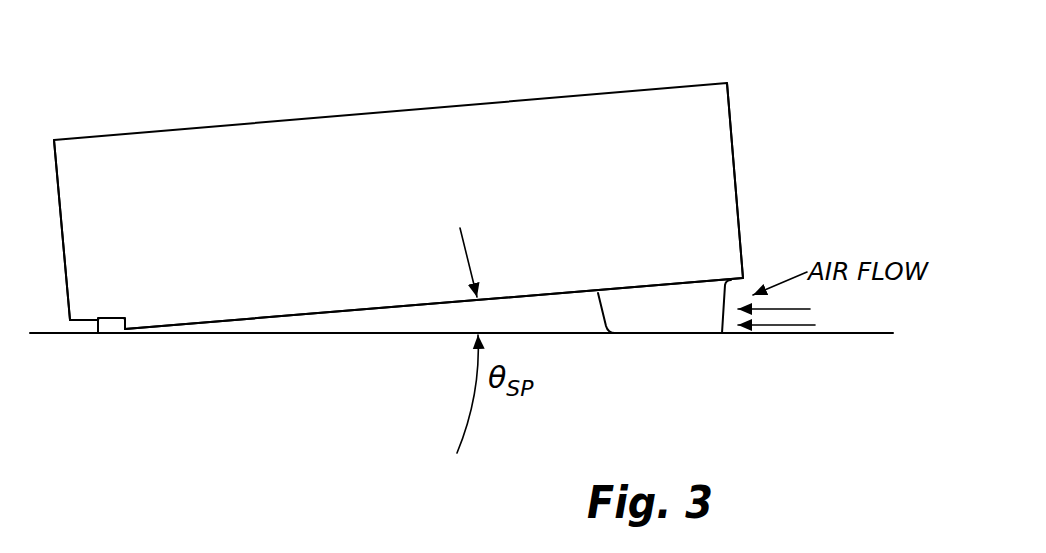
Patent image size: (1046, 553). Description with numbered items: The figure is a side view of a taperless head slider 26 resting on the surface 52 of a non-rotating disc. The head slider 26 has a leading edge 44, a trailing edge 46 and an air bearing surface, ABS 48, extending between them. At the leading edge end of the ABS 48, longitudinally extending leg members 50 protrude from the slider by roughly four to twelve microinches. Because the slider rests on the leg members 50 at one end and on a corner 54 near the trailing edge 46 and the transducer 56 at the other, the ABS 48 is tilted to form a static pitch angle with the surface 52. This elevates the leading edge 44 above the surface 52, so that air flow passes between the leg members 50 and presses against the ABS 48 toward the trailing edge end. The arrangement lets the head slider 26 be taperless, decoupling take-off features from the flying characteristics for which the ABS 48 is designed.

The head slider 26 is at (728, 46).
The leading edge 44 is at (735, 153).
The trailing edge 46 is at (62, 178).
The ABS 48 is at (347, 310).
The leg members 50 is at (600, 313).
The surface 52 is at (863, 337).
The corner 54 is at (122, 334).
The transducer 56 is at (96, 335).